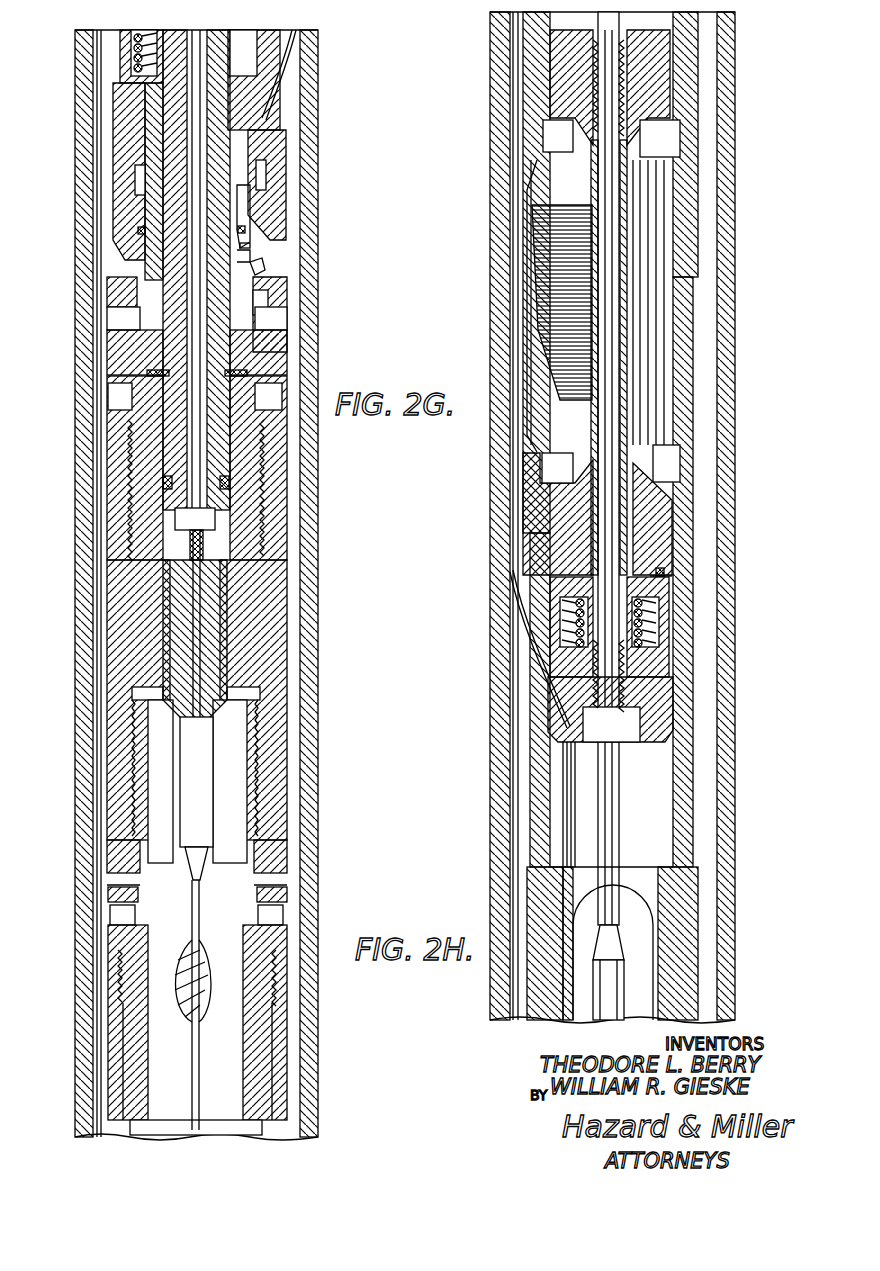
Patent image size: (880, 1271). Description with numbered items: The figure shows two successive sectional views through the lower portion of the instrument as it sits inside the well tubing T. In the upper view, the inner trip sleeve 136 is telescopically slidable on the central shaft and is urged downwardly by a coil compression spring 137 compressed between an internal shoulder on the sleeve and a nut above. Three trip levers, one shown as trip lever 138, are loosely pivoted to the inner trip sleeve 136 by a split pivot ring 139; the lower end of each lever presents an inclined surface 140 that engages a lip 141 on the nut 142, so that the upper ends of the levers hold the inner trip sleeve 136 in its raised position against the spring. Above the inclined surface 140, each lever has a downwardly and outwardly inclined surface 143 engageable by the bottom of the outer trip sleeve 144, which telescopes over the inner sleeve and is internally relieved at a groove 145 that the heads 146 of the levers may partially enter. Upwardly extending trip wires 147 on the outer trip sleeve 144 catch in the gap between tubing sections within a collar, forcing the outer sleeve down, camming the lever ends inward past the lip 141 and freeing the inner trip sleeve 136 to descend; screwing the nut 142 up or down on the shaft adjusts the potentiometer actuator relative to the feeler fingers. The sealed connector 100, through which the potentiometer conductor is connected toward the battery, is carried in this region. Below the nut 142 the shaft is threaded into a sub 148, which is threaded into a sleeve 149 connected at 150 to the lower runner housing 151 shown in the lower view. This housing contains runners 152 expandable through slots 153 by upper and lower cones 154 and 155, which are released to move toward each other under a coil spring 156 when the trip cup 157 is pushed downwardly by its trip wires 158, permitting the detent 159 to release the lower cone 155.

In FIG. 2G, the tubing T is at (80, 604).
In FIG. 2H, the tubing T is at (492, 512).
In FIG. 2G, the sealed connector 100 is at (216, 640).
In FIG. 2G, the inner trip sleeve 136 is at (145, 147).
In FIG. 2G, the coil compression spring 137 is at (268, 52).
In FIG. 2G, the trip lever 138 is at (251, 245).
In FIG. 2G, the split pivot ring 139 is at (246, 229).
In FIG. 2G, the inclined surface 140 is at (262, 266).
In FIG. 2G, the lip 141 is at (270, 283).
In FIG. 2G, the nut 142 is at (266, 352).
In FIG. 2G, the downwardly and outwardly inclined surface 143 is at (252, 256).
In FIG. 2G, the outer trip sleeve 144 is at (270, 128).
In FIG. 2G, the internal groove 145 is at (264, 175).
In FIG. 2G, the head 146 is at (250, 200).
In FIG. 2G, the trip wire 147 is at (272, 78).
In FIG. 2G, the sub 148 is at (242, 453).
In FIG. 2G, the sleeve 149 is at (270, 672).
In FIG. 2G, the connection 150 is at (258, 880).
In FIG. 2G, the lower runner housing 151 is at (272, 1078).
In FIG. 2H, the lower runner housing 151 is at (527, 70).
In FIG. 2H, the runner 152 is at (546, 305).
In FIG. 2H, the slot 153 is at (531, 165).
In FIG. 2H, the upper cone 154 is at (657, 78).
In FIG. 2H, the lower cone 155 is at (653, 505).
In FIG. 2H, the coil spring 156 is at (657, 620).
In FIG. 2H, the trip cup 157 is at (655, 708).
In FIG. 2H, the trip wire 158 is at (535, 640).
In FIG. 2H, the detent 159 is at (666, 575).